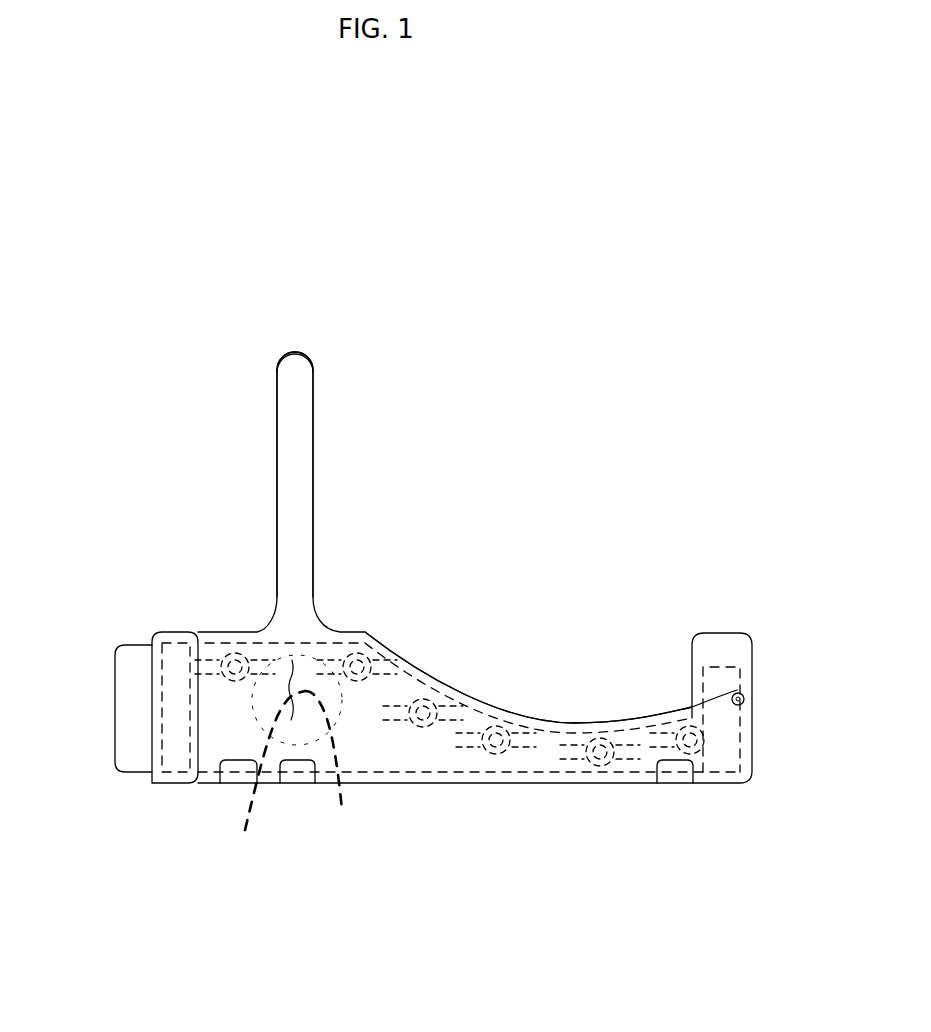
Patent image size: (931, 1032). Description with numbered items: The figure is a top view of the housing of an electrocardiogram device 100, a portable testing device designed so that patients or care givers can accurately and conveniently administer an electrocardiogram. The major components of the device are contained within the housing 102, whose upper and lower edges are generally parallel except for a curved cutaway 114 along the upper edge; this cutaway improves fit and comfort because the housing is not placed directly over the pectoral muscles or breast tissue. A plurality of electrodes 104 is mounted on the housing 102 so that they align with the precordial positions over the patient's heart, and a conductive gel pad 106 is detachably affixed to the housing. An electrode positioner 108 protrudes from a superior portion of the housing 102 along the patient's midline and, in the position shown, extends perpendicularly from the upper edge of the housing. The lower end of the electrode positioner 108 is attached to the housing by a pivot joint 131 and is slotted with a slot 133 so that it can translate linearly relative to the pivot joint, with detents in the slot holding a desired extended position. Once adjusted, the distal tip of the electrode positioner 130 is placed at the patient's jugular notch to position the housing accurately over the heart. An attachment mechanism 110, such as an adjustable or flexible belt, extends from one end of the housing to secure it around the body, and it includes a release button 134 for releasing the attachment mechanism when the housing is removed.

The electrocardiogram device 100 is at (197, 466).
The housing 102 is at (155, 627).
The electrodes 104 is at (497, 737).
The conductive gel pad 106 is at (263, 655).
The electrode positioner 108 is at (313, 395).
The attachment mechanism 110 is at (115, 733).
The curved cutaway 114 is at (568, 722).
The distal tip of the electrode positioner 130 is at (298, 352).
The pivot joint 131 is at (333, 767).
The slot 133 is at (269, 777).
The release button 134 is at (748, 699).